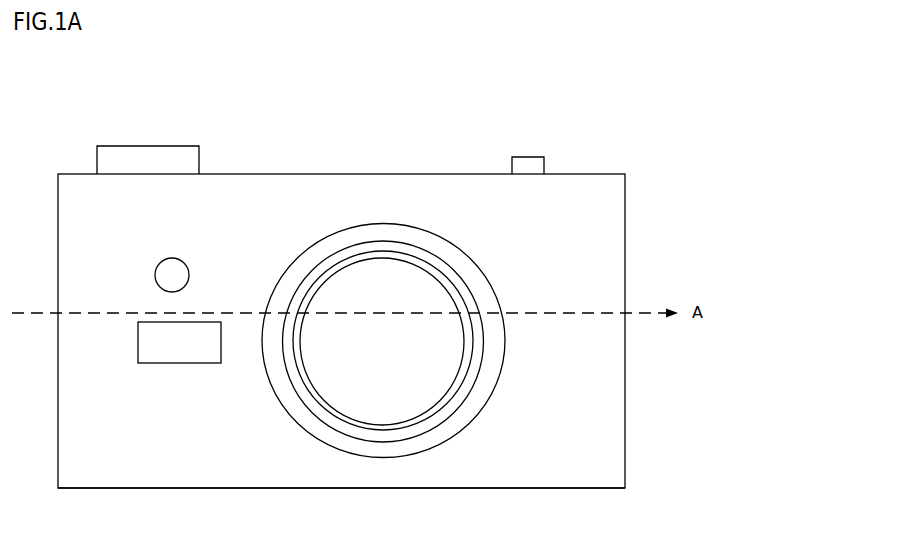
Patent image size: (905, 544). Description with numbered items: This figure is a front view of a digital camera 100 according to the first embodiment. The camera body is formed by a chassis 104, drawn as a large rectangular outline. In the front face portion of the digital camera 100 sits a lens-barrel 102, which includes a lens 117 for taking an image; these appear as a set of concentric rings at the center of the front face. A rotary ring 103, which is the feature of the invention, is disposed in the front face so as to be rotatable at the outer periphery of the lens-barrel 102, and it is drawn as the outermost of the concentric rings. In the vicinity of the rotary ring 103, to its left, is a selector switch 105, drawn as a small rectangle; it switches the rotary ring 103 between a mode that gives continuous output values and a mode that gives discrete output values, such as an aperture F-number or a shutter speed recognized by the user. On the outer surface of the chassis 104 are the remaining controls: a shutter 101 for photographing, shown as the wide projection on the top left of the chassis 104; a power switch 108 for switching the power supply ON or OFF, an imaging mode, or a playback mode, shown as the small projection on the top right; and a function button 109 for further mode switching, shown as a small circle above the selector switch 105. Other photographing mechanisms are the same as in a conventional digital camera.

The digital camera 100 is at (647, 256).
The shutter 101 is at (163, 144).
The power switch 108 is at (529, 157).
The function button 109 is at (182, 258).
The selector switch 105 is at (178, 357).
The rotary ring 103 is at (277, 390).
The lens-barrel 102 is at (423, 422).
The lens 117 is at (397, 282).
The chassis 104 is at (542, 488).